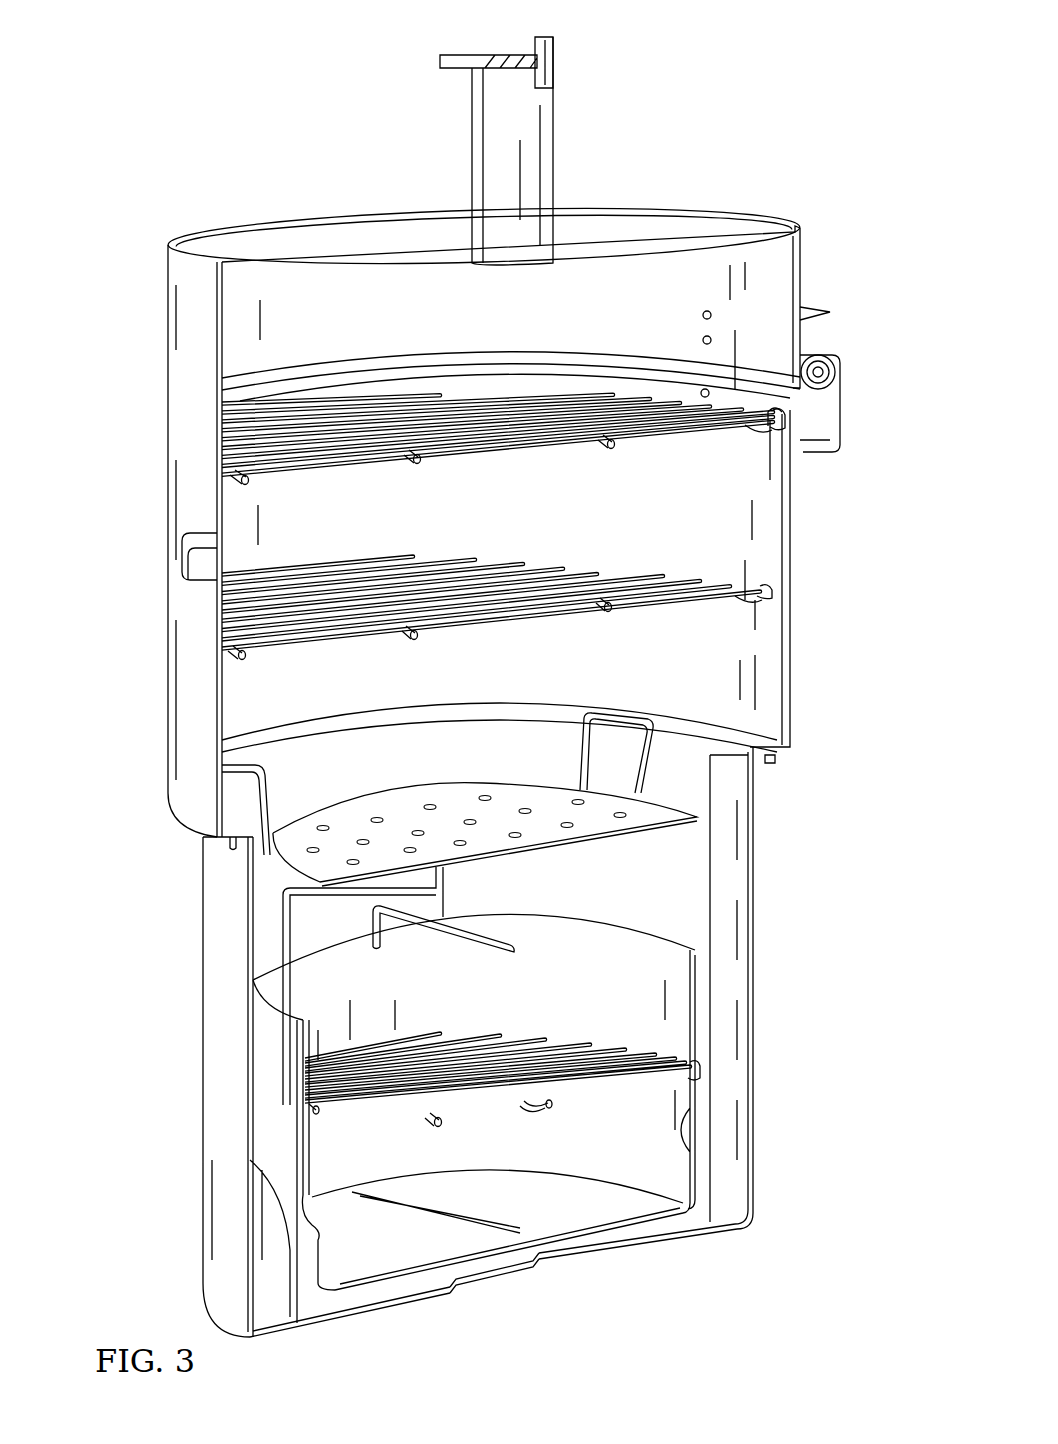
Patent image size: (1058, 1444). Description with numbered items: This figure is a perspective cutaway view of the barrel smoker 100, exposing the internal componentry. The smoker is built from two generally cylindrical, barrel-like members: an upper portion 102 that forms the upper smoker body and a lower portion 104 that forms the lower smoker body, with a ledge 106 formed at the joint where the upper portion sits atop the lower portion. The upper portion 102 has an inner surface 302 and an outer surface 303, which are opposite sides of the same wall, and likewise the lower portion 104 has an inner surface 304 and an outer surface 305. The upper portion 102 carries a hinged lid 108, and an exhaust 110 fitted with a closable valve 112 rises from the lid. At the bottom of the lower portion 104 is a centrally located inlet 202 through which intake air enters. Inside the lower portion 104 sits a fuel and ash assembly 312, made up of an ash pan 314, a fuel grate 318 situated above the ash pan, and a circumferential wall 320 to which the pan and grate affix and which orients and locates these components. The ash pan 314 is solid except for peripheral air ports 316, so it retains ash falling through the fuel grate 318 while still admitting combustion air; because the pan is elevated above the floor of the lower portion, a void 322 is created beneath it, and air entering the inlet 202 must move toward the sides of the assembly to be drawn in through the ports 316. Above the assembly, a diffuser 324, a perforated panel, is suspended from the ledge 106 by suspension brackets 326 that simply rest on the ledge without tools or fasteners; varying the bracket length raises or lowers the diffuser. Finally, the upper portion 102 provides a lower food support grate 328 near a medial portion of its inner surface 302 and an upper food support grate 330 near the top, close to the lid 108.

The barrel smoker 100 is at (705, 152).
The upper portion 102 is at (170, 674).
The lower portion 104 is at (206, 1046).
The ledge 106 is at (700, 726).
The lid 108 is at (186, 243).
The exhaust 110 is at (555, 140).
The closable valve 112 is at (520, 55).
The inlet 202 is at (498, 1276).
The inner surface 302 is at (790, 707).
The outer surface 303 is at (792, 628).
The inner surface 304 is at (762, 820).
The outer surface 305 is at (756, 892).
The fuel and ash assembly 312 is at (708, 1028).
The ash pan 314 is at (600, 1216).
The air ports 316 is at (535, 1115).
The fuel grate 318 is at (520, 1032).
The circumferential wall 320 is at (558, 915).
The void 322 is at (316, 1308).
The diffuser 324 is at (455, 792).
The suspension brackets 326 is at (630, 714).
The lower food support grate 328 is at (625, 557).
The upper food support grate 330 is at (598, 392).